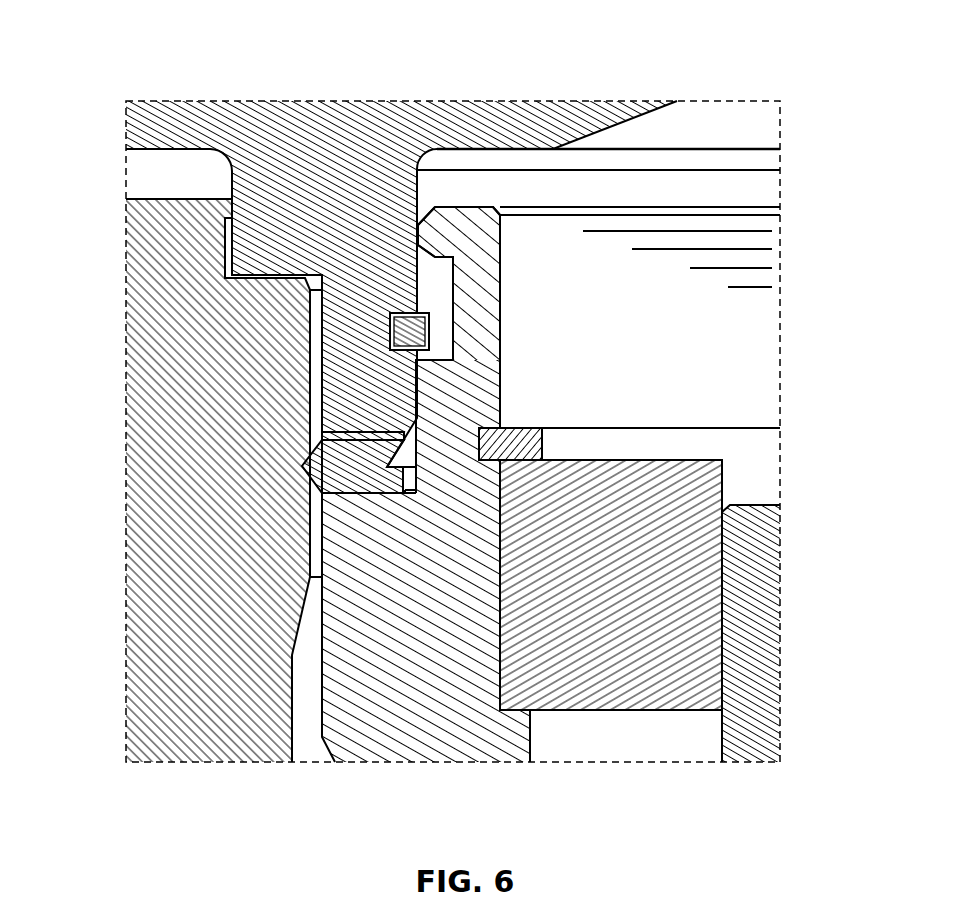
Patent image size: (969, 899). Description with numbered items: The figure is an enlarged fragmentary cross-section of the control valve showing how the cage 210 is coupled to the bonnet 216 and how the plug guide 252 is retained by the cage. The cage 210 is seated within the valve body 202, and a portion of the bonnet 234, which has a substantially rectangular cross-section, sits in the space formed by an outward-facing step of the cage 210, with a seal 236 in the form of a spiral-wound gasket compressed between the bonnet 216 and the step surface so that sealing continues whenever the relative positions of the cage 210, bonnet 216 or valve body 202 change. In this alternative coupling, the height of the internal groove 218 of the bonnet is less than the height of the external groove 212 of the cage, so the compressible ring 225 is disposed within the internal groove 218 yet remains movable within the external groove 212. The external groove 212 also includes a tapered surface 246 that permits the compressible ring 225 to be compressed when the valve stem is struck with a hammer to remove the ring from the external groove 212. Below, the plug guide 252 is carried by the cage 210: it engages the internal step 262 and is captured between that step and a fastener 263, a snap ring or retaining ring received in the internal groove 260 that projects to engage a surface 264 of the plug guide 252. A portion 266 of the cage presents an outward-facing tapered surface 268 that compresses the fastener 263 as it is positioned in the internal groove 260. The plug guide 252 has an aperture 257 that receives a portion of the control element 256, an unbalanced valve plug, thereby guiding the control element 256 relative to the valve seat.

The valve body 202 is at (155, 283).
The cage 210 is at (410, 735).
The external groove 212 is at (454, 295).
The bonnet 216 is at (274, 115).
The internal groove 218 is at (455, 312).
The compressible ring 225 is at (432, 340).
The portion of the bonnet 234 is at (335, 412).
The seal 236 is at (347, 481).
The tapered surface 246 is at (418, 246).
The plug guide 252 is at (700, 623).
The control element 256 is at (772, 530).
The aperture 257 is at (722, 478).
The internal groove 260 is at (497, 426).
The internal step 262 is at (513, 712).
The fastener 263 is at (542, 442).
The surface of the plug guide 264 is at (693, 460).
The portion of the cage 266 is at (460, 218).
The tapered surface 268 is at (500, 213).